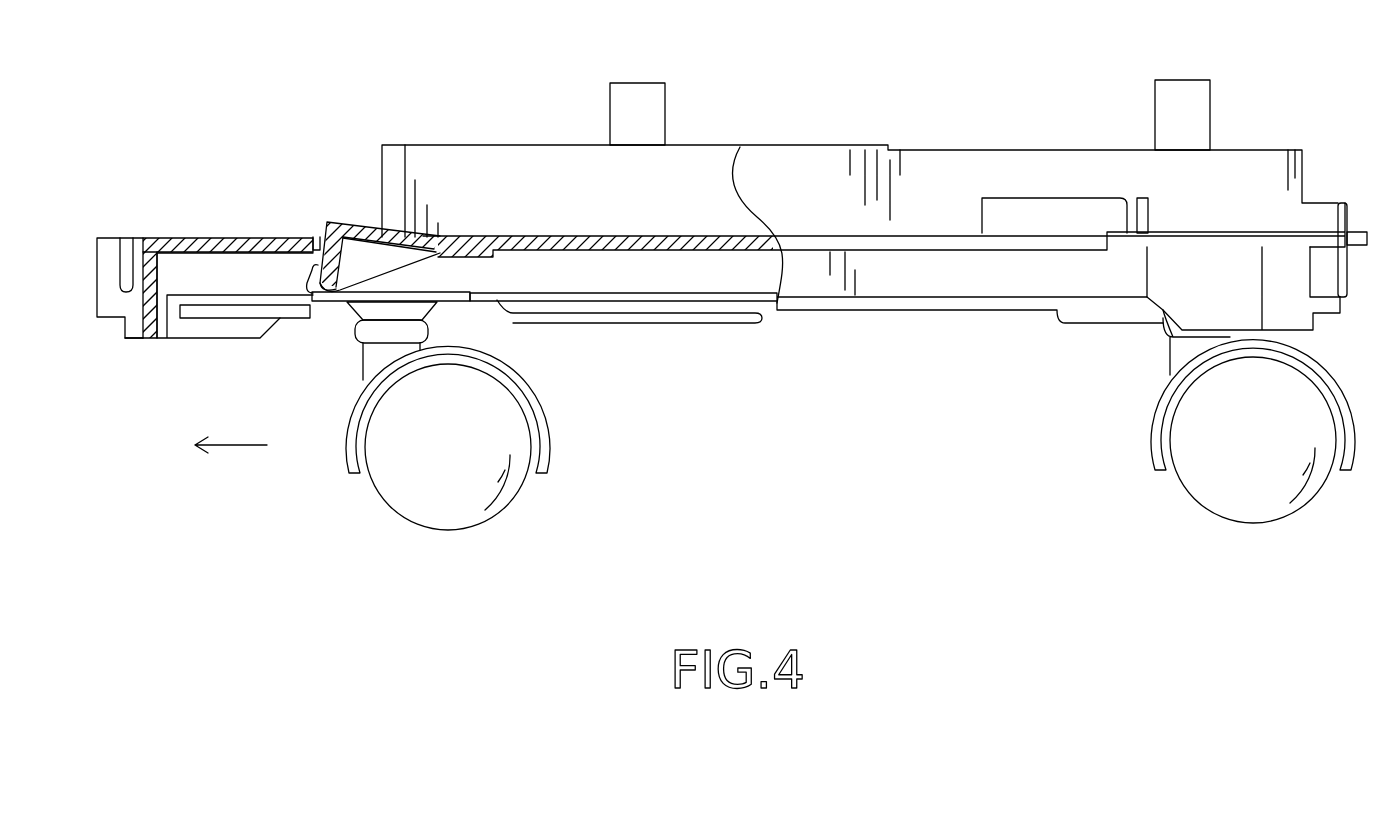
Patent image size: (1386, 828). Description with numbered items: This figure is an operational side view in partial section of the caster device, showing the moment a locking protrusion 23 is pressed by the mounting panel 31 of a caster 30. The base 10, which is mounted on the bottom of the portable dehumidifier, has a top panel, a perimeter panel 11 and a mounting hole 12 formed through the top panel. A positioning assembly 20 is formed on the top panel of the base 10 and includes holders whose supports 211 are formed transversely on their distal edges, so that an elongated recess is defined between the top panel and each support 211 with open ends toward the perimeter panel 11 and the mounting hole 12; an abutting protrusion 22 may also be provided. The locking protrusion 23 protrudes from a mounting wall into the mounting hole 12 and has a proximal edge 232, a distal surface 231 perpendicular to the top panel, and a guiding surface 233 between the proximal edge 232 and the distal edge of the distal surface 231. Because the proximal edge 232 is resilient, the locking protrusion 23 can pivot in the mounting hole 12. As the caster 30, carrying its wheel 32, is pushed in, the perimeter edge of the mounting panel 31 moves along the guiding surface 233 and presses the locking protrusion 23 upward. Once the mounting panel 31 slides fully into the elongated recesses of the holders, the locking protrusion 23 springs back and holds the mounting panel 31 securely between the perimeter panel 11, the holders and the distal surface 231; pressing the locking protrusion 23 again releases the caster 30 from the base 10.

The base 10 is at (683, 212).
The perimeter panel 11 is at (150, 320).
The mounting hole 12 is at (322, 238).
The positioning assembly 20 is at (461, 301).
The support 211 is at (288, 341).
The abutting protrusion 22 is at (222, 263).
The locking protrusion 23 is at (461, 269).
The distal surface 231 is at (316, 295).
The proximal edge 232 is at (423, 247).
The guiding surface 233 is at (410, 262).
The caster 30 is at (492, 424).
The mounting panel 31 is at (463, 297).
The wheel 32 is at (515, 432).